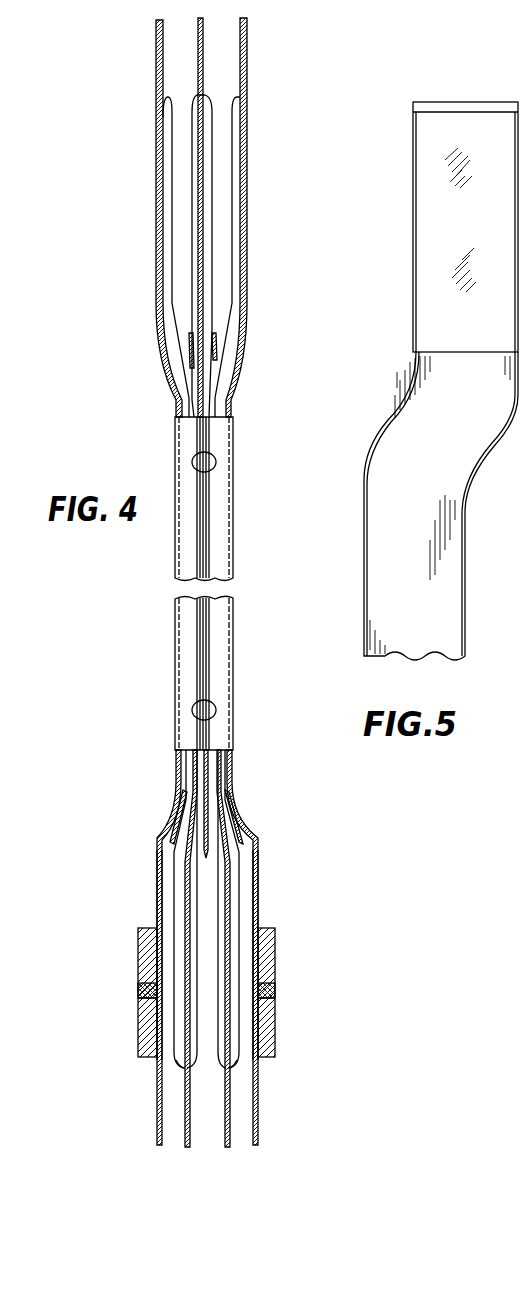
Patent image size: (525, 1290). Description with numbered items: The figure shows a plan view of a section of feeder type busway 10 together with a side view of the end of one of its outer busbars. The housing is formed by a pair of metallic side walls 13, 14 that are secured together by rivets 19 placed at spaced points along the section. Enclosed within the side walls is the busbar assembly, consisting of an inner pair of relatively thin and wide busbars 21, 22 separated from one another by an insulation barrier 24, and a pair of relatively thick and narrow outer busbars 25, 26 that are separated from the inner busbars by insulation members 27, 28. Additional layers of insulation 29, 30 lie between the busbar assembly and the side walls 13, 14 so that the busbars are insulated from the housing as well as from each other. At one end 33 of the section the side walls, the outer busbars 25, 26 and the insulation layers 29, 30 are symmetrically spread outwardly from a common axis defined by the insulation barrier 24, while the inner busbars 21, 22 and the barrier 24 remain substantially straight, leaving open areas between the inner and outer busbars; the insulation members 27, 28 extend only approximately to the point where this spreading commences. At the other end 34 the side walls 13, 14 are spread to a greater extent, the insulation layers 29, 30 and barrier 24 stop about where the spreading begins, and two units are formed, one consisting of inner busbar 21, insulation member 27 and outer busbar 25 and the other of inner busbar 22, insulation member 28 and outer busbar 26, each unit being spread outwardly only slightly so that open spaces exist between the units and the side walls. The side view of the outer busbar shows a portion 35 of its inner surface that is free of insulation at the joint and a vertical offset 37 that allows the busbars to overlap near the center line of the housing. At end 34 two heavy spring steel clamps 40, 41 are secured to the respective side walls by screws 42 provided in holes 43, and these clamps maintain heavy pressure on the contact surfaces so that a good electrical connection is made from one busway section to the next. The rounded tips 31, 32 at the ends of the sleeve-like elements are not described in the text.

In FIG. 4, the busway 10 is at (243, 503).
In FIG. 4, the side wall 13 is at (160, 104).
In FIG. 4, the side wall 14 is at (247, 111).
In FIG. 4, the rivets 19 is at (216, 457).
In FIG. 4, the inner busbar 21 is at (192, 173).
In FIG. 4, the inner busbar 22 is at (213, 178).
In FIG. 4, the insulation barrier 24 is at (201, 33).
In FIG. 4, the outer busbar 25 is at (165, 124).
In FIG. 5, the outer busbar 25 is at (362, 599).
In FIG. 4, the outer busbar 26 is at (237, 136).
In FIG. 4, the insulation member 27 is at (189, 340).
In FIG. 4, the insulation member 28 is at (214, 345).
In FIG. 4, the layer of insulation 29 is at (165, 78).
In FIG. 4, the layer of insulation 30 is at (241, 84).
In FIG. 4, the tip of first sleeve 31 is at (181, 1069).
In FIG. 4, the tip of second sleeve 32 is at (235, 1068).
In FIG. 4, the end 33 is at (211, 584).
In FIG. 4, the end 34 is at (263, 880).
In FIG. 5, the portion 35 is at (420, 292).
In FIG. 5, the vertical offset 37 is at (390, 420).
In FIG. 4, the spring steel clamp 40 is at (139, 934).
In FIG. 4, the spring steel clamp 41 is at (275, 948).
In FIG. 4, the screws 42 is at (148, 992).
In FIG. 4, the holes 43 is at (139, 1005).